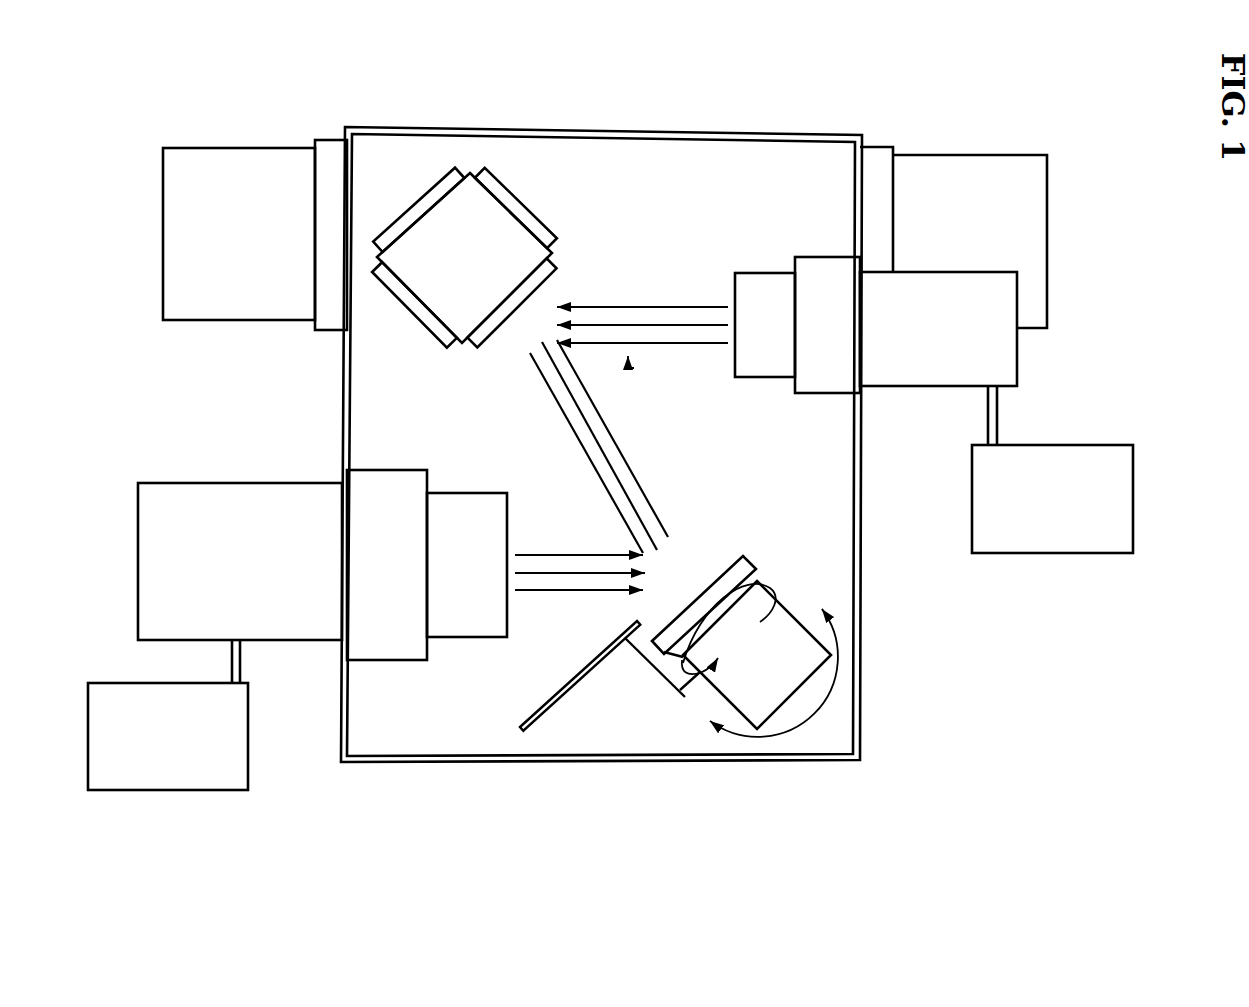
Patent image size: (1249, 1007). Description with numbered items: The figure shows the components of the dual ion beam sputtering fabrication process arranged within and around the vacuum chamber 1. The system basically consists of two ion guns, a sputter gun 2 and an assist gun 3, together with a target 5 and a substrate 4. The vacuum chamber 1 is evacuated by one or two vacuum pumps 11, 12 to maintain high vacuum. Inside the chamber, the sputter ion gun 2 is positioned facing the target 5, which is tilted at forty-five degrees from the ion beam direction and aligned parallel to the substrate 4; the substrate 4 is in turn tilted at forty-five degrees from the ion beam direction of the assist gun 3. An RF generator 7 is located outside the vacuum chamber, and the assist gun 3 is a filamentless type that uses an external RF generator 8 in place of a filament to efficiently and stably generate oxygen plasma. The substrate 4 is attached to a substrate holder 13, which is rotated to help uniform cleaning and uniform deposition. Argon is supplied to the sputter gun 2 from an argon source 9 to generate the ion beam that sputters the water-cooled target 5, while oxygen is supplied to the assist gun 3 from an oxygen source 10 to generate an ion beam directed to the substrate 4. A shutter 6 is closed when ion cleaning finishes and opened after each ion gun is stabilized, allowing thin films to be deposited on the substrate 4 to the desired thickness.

The vacuum chamber 1 is at (548, 762).
The sputter ion gun 2 is at (760, 285).
The assist gun 3 is at (462, 622).
The substrate 4 is at (722, 580).
The target 5 is at (473, 195).
The shutter 6 is at (1050, 542).
The RF generator 7 is at (1015, 358).
The external RF generator 8 is at (155, 568).
The argon source 9 is at (600, 680).
The oxygen source 10 is at (130, 775).
The vacuum pump 11 is at (1047, 225).
The vacuum pump 12 is at (177, 287).
The substrate holder 13 is at (810, 652).